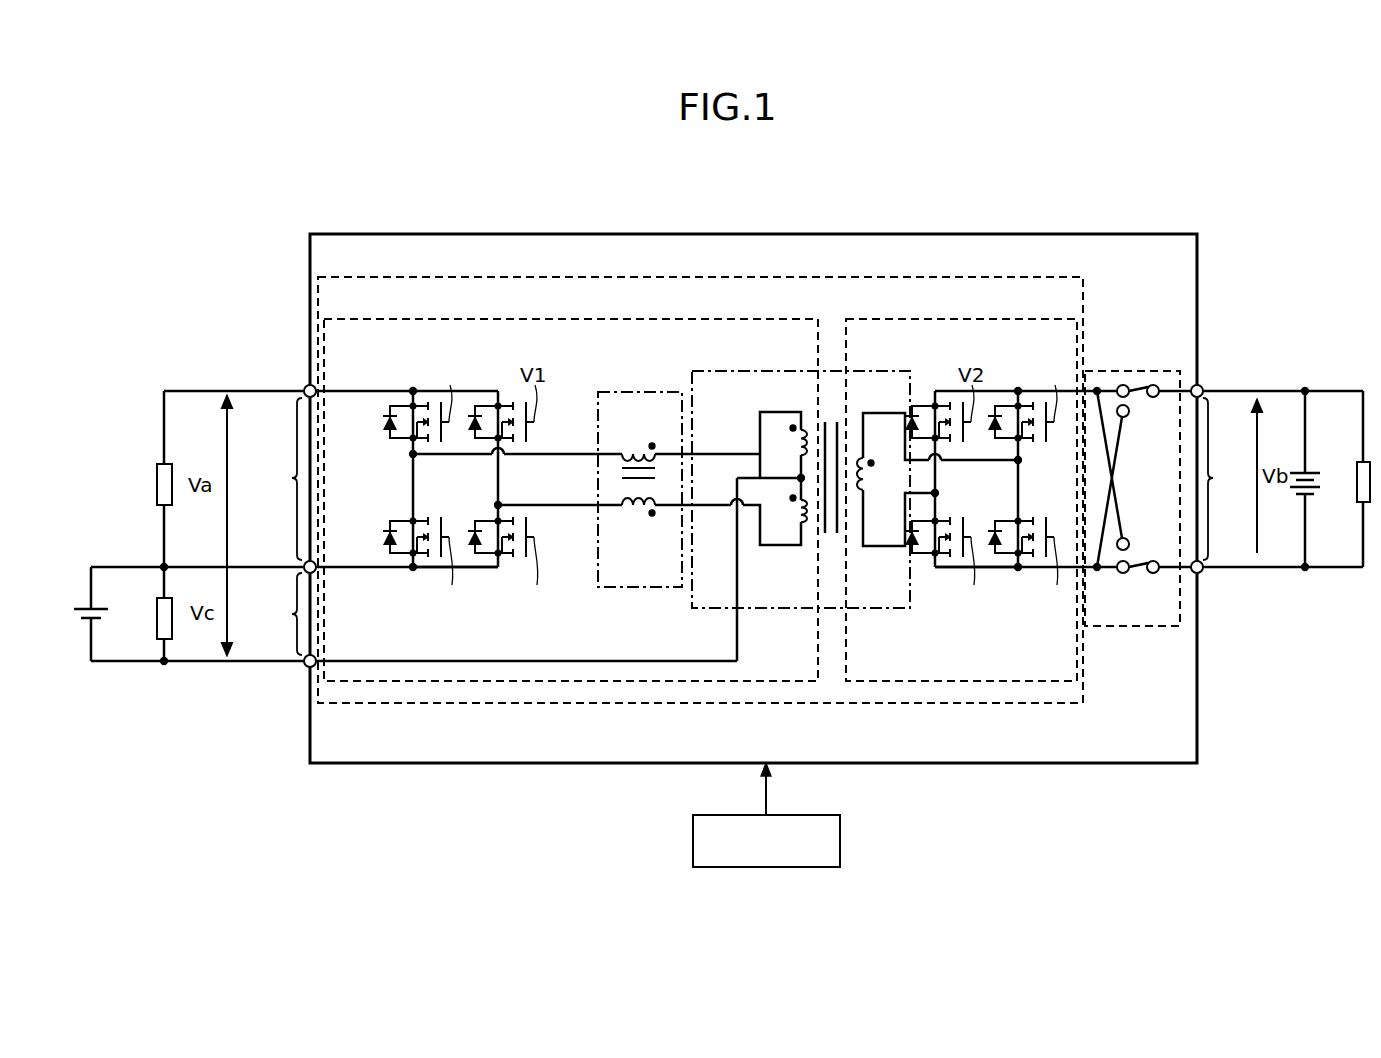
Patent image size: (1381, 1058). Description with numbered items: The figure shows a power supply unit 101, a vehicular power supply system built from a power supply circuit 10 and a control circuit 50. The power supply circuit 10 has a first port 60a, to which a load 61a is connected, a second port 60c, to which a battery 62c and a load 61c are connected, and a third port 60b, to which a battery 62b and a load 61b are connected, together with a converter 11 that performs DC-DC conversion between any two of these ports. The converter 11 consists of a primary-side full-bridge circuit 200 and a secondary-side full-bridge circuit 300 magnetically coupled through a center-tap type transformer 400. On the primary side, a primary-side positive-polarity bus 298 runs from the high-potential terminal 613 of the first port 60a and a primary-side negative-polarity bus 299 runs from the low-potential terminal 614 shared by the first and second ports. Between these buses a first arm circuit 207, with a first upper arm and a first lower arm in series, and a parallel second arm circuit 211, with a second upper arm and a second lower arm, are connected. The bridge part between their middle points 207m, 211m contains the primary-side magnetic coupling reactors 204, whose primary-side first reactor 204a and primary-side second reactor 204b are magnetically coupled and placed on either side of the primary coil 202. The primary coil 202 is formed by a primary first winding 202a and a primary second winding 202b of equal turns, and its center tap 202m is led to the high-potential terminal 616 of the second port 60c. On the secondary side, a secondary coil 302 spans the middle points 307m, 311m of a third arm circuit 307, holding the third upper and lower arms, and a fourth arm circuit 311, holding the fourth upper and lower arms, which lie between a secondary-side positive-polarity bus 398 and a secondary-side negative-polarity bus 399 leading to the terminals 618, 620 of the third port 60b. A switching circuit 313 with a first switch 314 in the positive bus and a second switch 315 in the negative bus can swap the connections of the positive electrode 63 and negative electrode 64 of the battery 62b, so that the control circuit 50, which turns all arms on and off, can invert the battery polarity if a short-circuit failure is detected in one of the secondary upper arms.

The power supply unit 101 is at (243, 206).
The power supply circuit 10 is at (705, 234).
The converter 11 is at (688, 277).
The primary-side full-bridge circuit 200 is at (578, 319).
The secondary-side full-bridge circuit 300 is at (968, 319).
The transformer 400 is at (740, 371).
The primary-side magnetic coupling reactors 204 is at (618, 392).
The primary-side first reactor 204a is at (635, 446).
The primary-side second reactor 204b is at (635, 513).
The primary coil 202 is at (748, 494).
The primary first winding 202a is at (795, 440).
The primary second winding 202b is at (798, 545).
The center tap 202m is at (801, 478).
The secondary coil 302 is at (870, 463).
The primary-side positive-polarity bus 298 is at (400, 391).
The primary-side negative-polarity bus 299 is at (412, 570).
The first arm circuit 207 is at (420, 582).
The second arm circuit 211 is at (500, 582).
The middle point of the first arm circuit 207m is at (413, 456).
The middle point of the second arm circuit 211m is at (498, 505).
The secondary-side positive-polarity bus 398 is at (1000, 391).
The secondary-side negative-polarity bus 399 is at (1018, 572).
The third arm circuit 307 is at (1020, 582).
The fourth arm circuit 311 is at (935, 582).
The middle point of the third arm circuit 307m is at (1018, 462).
The middle point of the fourth arm circuit 311m is at (937, 493).
The switching circuit 313 is at (1118, 371).
The first switch 314 is at (1140, 392).
The second switch 315 is at (1150, 563).
The terminal 613 is at (308, 386).
The terminal 614 is at (305, 567).
The terminal 616 is at (308, 667).
The terminal 618 is at (1199, 385).
The terminal 620 is at (1199, 573).
The load 61a is at (160, 464).
The load 61c is at (158, 598).
The battery 62c is at (108, 617).
The first port 60a is at (274, 479).
The second port 60c is at (274, 614).
The third port 60b is at (1228, 479).
The load 61b is at (1363, 502).
The battery 62b is at (1313, 479).
The positive electrode 63 is at (1300, 473).
The negative electrode 64 is at (1305, 495).
The control circuit 50 is at (805, 815).